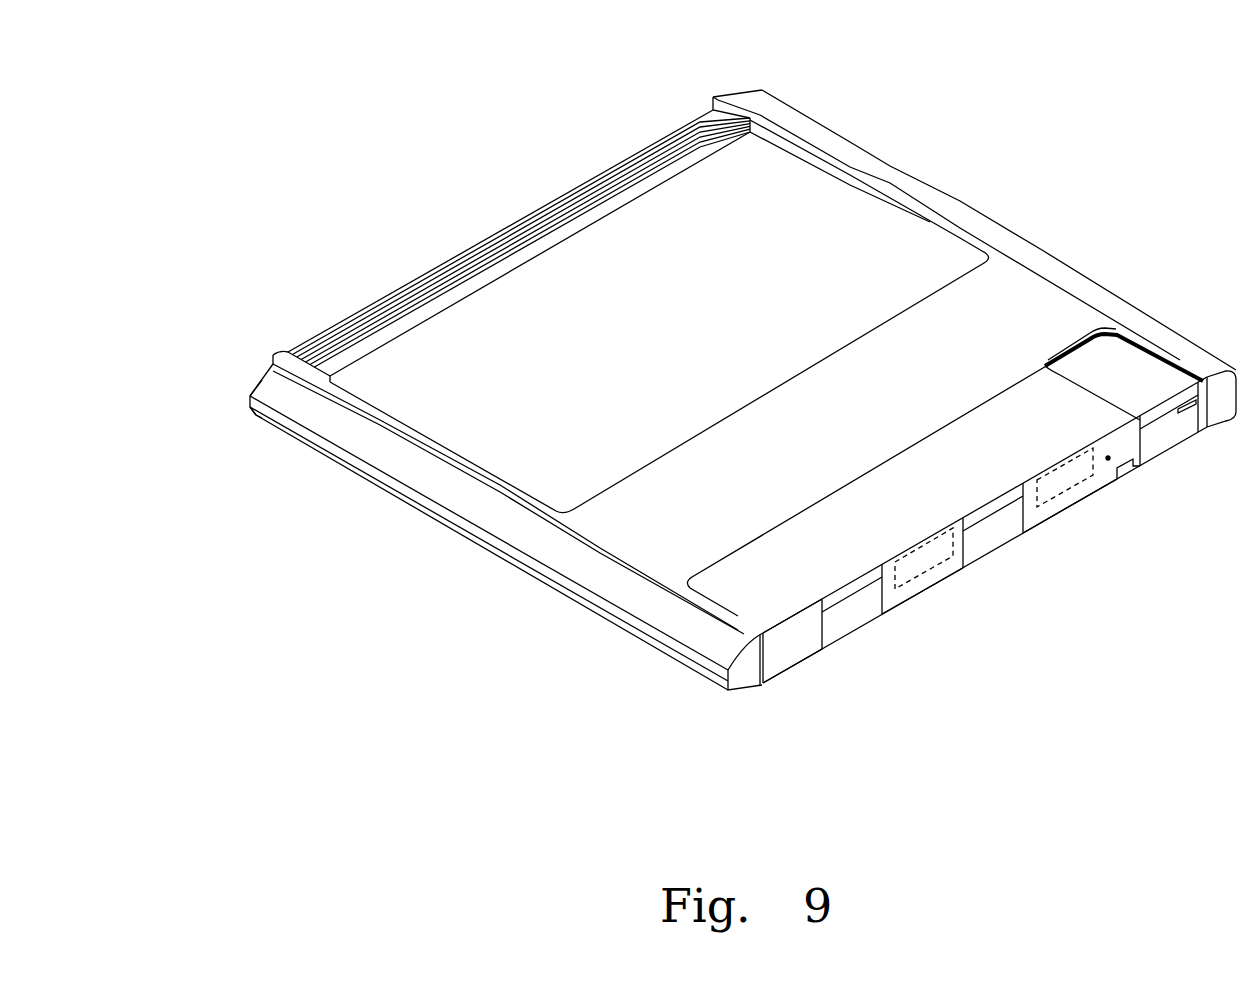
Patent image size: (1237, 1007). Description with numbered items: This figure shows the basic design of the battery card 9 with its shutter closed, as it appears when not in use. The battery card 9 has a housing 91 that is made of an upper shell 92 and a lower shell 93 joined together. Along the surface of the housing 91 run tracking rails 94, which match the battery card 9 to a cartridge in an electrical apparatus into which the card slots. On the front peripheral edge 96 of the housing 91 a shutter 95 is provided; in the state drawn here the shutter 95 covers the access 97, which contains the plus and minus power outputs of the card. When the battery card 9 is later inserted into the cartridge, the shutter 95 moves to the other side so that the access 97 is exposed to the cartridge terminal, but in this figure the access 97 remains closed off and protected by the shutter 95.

The battery card 9 is at (762, 260).
The housing 91 is at (585, 248).
The upper shell 92 is at (250, 396).
The lower shell 93 is at (256, 412).
The tracking rails 94 is at (722, 102).
The shutter 95 is at (796, 652).
The front peripheral edge 96 is at (744, 678).
The access 97 is at (922, 566).